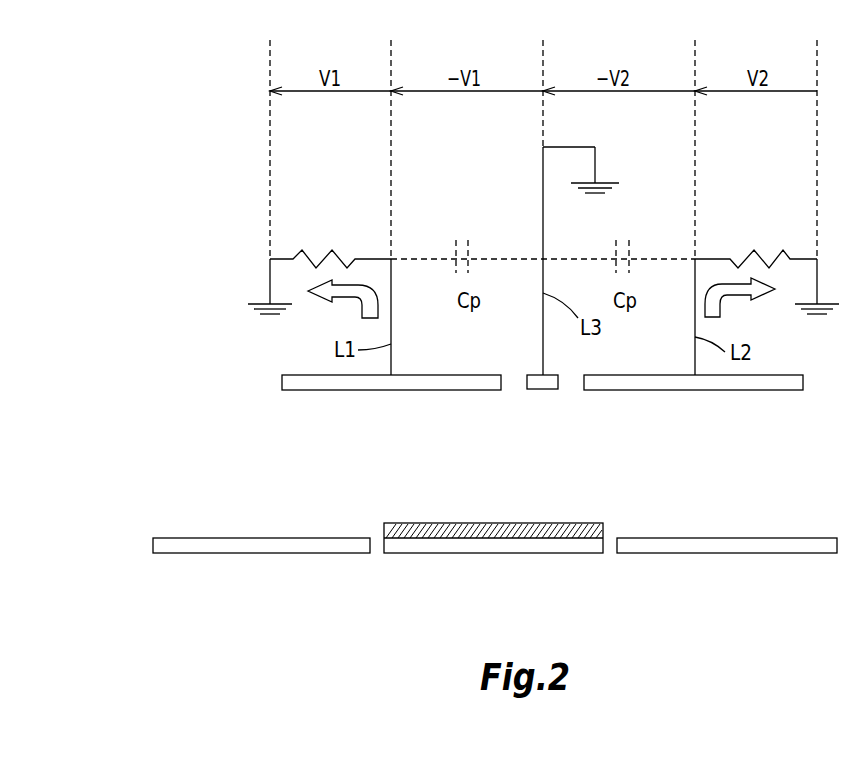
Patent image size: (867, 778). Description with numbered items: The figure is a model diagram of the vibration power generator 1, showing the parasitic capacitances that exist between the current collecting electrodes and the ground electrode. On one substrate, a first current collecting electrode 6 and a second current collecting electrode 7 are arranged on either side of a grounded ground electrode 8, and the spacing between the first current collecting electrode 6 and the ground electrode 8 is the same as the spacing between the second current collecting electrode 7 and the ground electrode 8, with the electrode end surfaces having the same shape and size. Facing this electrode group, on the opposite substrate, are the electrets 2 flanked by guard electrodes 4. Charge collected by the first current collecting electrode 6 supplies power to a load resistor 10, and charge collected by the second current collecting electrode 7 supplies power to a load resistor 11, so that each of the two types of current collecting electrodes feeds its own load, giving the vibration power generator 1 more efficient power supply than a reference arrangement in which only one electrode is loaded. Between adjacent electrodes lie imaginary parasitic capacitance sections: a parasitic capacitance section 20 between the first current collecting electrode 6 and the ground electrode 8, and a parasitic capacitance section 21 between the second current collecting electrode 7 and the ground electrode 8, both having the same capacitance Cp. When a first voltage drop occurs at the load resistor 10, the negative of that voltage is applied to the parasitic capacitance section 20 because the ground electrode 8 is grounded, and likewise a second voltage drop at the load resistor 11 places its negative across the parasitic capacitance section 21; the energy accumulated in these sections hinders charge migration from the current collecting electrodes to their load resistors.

The vibration power generator 1 is at (188, 392).
The electret 2 is at (591, 523).
The guard electrode 4 is at (303, 553).
The first current collecting electrode 6 is at (303, 390).
The second current collecting electrode 7 is at (720, 390).
The ground electrode 8 is at (542, 390).
The load resistor 10 is at (336, 250).
The load resistor 11 is at (755, 250).
The parasitic capacitance section 20 is at (469, 240).
The parasitic capacitance section 21 is at (629, 240).